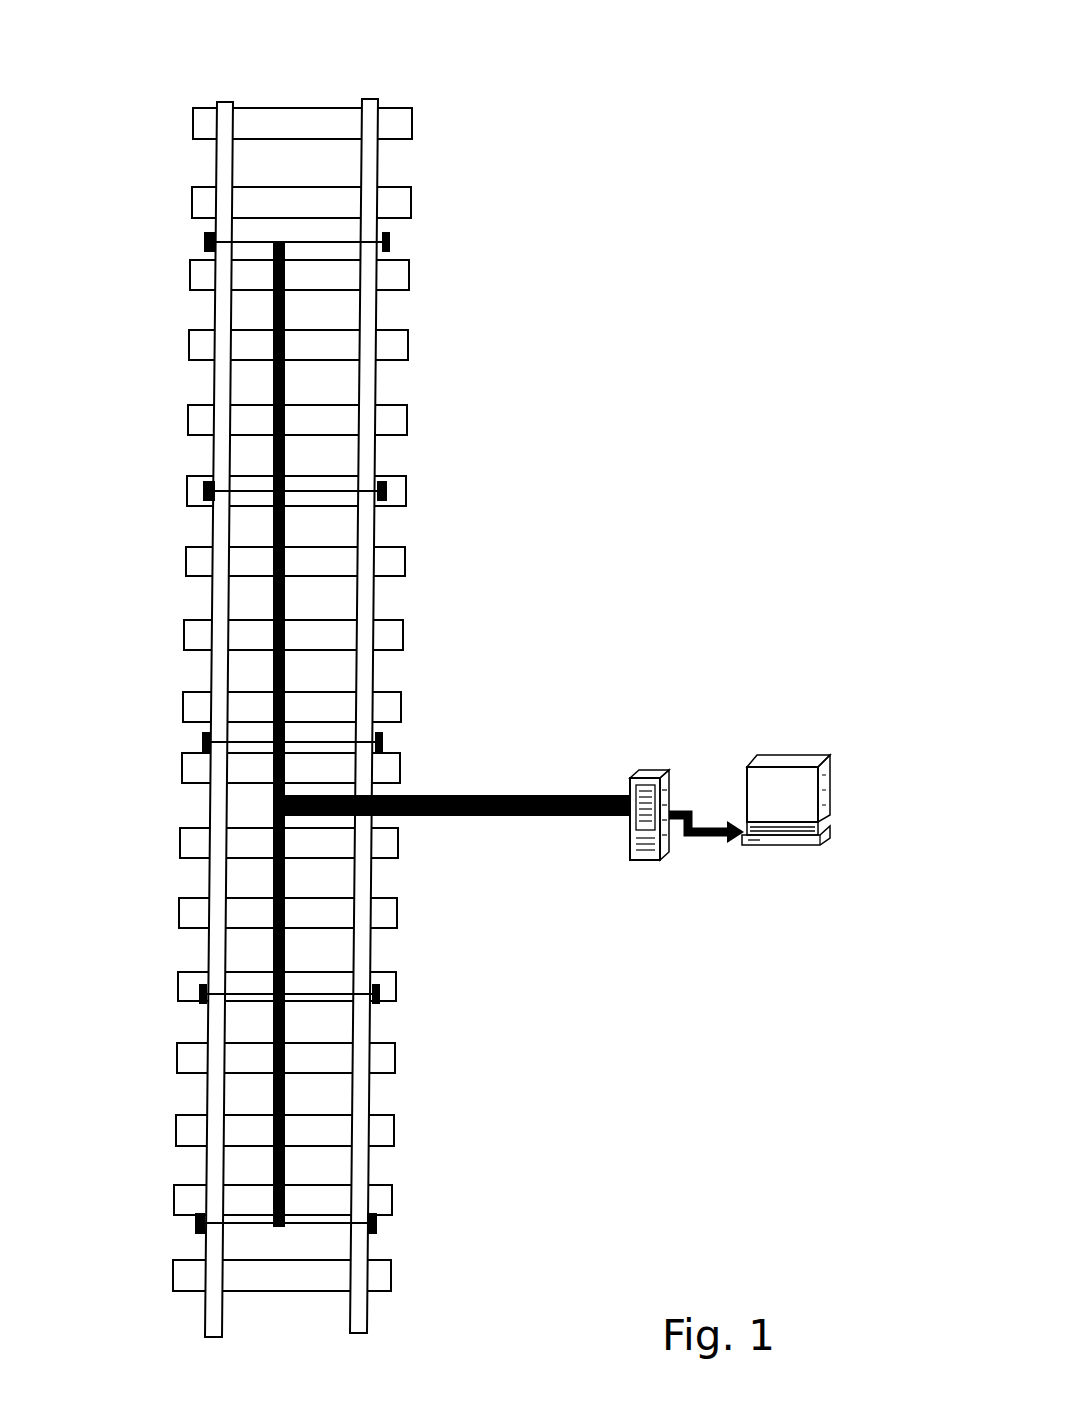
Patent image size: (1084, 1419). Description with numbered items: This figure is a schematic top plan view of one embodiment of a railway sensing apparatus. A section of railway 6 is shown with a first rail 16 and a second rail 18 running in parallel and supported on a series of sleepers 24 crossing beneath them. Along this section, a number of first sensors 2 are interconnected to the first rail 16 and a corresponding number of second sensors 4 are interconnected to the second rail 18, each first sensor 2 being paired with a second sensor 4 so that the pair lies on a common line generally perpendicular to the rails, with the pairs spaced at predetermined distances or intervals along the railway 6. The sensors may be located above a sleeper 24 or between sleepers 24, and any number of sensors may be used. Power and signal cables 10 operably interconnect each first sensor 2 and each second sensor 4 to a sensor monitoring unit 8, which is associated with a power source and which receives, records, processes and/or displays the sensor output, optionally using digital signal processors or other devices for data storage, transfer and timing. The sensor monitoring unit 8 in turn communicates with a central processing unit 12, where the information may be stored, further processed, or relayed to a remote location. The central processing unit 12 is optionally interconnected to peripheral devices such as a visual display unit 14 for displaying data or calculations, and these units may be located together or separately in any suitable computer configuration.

The first sensor 2 is at (385, 240).
The second sensor 4 is at (207, 240).
The railway 6 is at (417, 540).
The sensor monitoring unit 8 is at (648, 860).
The power and signal cables 10 is at (315, 238).
The central processing unit 12 is at (790, 845).
The visual display unit 14 is at (798, 777).
The first rail 16 is at (372, 103).
The second rail 18 is at (223, 115).
The sleeper 24 is at (247, 132).